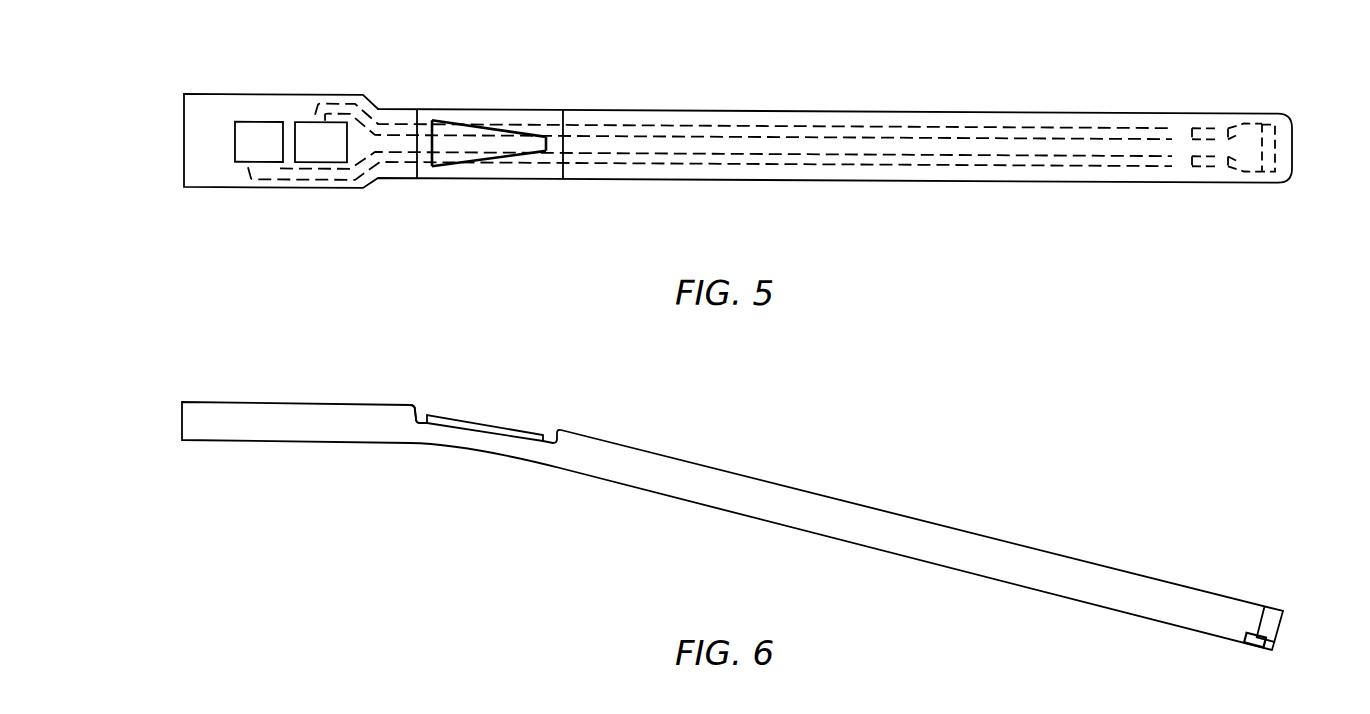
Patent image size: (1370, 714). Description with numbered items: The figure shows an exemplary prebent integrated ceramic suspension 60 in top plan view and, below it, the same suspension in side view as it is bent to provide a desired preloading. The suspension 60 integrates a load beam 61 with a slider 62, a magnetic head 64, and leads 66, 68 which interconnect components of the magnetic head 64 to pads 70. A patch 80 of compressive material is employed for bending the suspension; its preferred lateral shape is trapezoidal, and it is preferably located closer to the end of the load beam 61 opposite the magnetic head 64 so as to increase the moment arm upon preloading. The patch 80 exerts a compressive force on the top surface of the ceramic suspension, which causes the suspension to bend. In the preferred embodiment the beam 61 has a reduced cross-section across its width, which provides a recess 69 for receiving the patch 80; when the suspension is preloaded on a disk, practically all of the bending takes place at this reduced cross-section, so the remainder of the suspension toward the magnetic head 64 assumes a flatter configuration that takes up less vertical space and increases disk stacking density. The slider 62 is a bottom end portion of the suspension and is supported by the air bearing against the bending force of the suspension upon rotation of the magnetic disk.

In FIG. 5, the prebent integrated ceramic suspension 60 is at (890, 81).
In FIG. 6, the prebent integrated ceramic suspension 60 is at (910, 460).
In FIG. 5, the load beam 61 is at (1017, 107).
In FIG. 6, the load beam 61 is at (962, 528).
In FIG. 6, the slider 62 is at (1234, 640).
In FIG. 5, the magnetic head 64 is at (1273, 121).
In FIG. 6, the magnetic head 64 is at (1263, 612).
In FIG. 5, the lead 66 is at (683, 126).
In FIG. 5, the lead 68 is at (757, 159).
In FIG. 5, the recess 69 is at (495, 168).
In FIG. 6, the recess 69 is at (423, 418).
In FIG. 5, the pads 70 is at (318, 144).
In FIG. 5, the patch 80 is at (490, 119).
In FIG. 6, the patch 80 is at (487, 418).